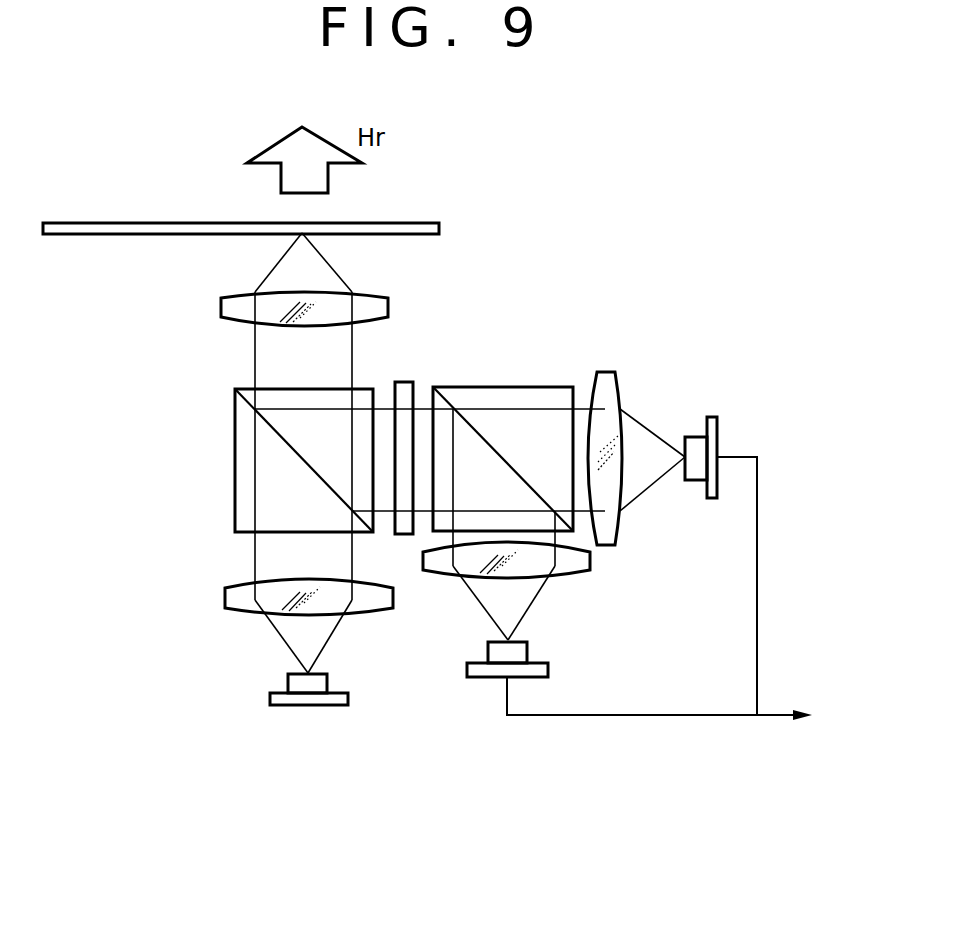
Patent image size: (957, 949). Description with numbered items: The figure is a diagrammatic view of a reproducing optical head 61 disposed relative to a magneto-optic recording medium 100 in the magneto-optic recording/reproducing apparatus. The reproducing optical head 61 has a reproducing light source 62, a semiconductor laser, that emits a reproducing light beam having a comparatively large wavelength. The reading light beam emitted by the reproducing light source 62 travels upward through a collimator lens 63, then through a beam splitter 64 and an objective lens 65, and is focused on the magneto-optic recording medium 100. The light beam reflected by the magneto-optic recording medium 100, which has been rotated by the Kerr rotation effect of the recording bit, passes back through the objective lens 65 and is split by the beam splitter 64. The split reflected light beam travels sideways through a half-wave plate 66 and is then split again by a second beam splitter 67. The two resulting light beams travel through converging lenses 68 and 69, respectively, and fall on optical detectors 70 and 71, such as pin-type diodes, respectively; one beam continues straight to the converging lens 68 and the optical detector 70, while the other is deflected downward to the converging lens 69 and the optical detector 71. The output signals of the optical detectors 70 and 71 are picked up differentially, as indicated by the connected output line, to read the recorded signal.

The magneto-optic recording medium 100 is at (428, 221).
The objective lens 65 is at (388, 302).
The beam splitter 64 is at (235, 410).
The reproducing optical head 61 is at (146, 470).
The half-wave plate 66 is at (408, 382).
The beam splitter 67 is at (474, 387).
The converging lens 68 is at (610, 376).
The optical detector 70 is at (694, 437).
The converging lens 69 is at (590, 561).
The collimator lens 63 is at (225, 597).
The reproducing light source 62 is at (327, 683).
The optical detector 71 is at (527, 653).